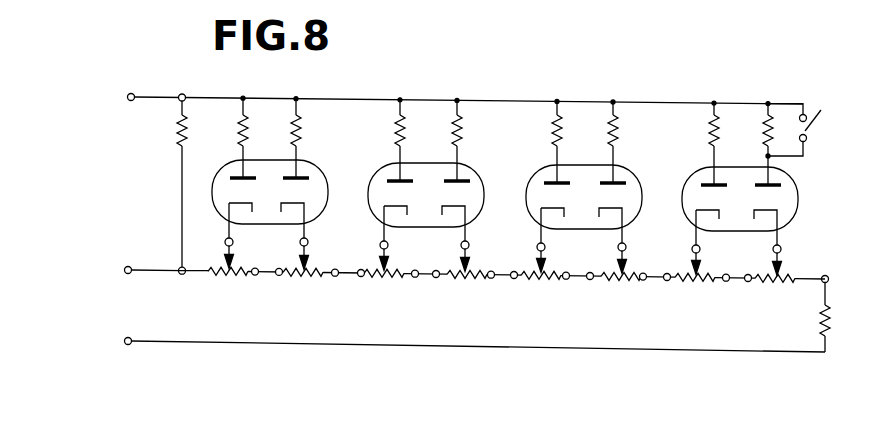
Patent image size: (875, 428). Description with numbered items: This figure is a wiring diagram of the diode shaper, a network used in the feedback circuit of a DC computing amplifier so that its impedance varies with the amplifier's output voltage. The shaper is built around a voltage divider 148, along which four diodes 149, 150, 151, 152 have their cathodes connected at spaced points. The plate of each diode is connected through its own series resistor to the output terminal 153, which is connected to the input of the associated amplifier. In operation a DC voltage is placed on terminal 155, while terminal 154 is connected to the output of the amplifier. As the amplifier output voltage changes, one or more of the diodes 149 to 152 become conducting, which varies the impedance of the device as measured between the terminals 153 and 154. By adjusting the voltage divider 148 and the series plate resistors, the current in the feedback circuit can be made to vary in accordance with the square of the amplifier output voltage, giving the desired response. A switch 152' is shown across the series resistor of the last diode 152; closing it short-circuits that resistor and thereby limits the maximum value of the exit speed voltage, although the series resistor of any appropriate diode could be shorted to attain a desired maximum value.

The voltage divider 148 is at (516, 290).
The diode 149 is at (313, 167).
The diode 150 is at (470, 168).
The diode 151 is at (612, 167).
The diode 152 is at (760, 188).
The switch 152' is at (816, 131).
The output terminal 153 is at (127, 102).
The terminal 154 is at (126, 268).
The terminal 155 is at (127, 338).